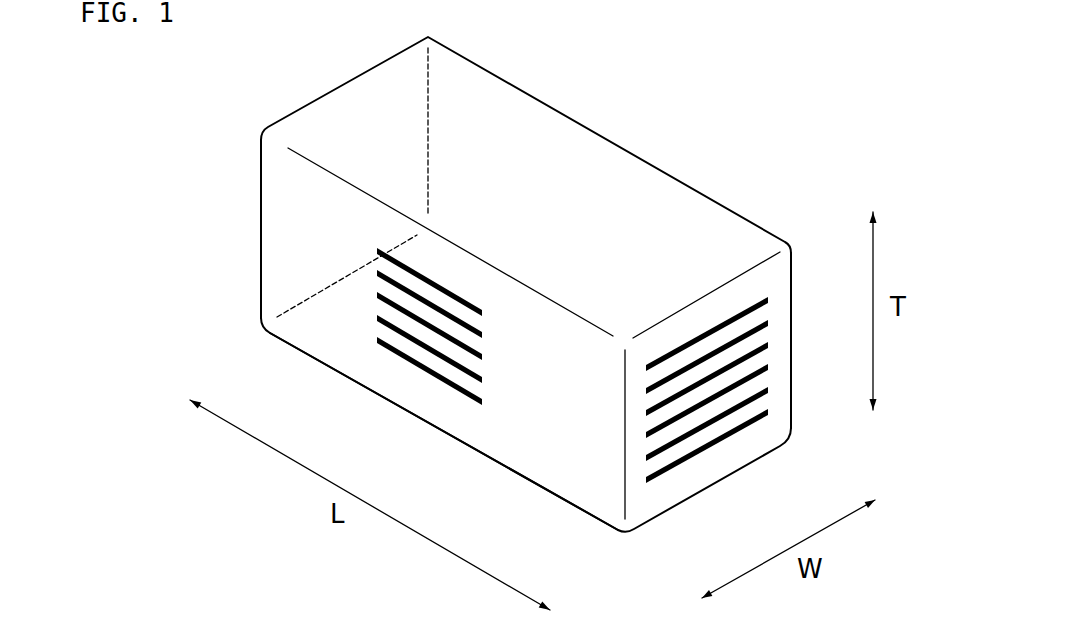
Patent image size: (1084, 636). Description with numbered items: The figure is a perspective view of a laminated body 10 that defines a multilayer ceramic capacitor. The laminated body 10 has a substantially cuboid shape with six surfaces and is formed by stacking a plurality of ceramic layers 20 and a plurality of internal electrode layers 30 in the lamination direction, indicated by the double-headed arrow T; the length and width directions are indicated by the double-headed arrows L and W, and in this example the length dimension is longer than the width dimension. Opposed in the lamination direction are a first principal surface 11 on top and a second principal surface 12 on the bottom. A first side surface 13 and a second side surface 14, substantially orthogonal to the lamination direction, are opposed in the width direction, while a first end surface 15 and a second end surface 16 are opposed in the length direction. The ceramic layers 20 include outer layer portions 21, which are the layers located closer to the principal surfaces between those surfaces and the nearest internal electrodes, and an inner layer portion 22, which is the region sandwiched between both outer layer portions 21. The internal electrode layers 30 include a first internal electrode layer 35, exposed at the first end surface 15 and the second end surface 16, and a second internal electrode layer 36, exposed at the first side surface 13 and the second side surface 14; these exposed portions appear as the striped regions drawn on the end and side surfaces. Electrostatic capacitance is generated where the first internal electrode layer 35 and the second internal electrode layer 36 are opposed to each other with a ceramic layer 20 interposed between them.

The laminated body 10 is at (794, 136).
The first principal surface 11 is at (542, 133).
The second principal surface 12 is at (533, 435).
The first side surface 13 is at (320, 323).
The second side surface 14 is at (640, 202).
The first end surface 15 is at (283, 183).
The second end surface 16 is at (780, 320).
The ceramic layers 20 is at (576, 359).
The outer layer portions 21 is at (742, 292).
The inner layer portion 22 is at (398, 315).
The internal electrode layers 30 is at (590, 380).
The first internal electrode layer 35 is at (710, 425).
The second internal electrode layer 36 is at (460, 370).